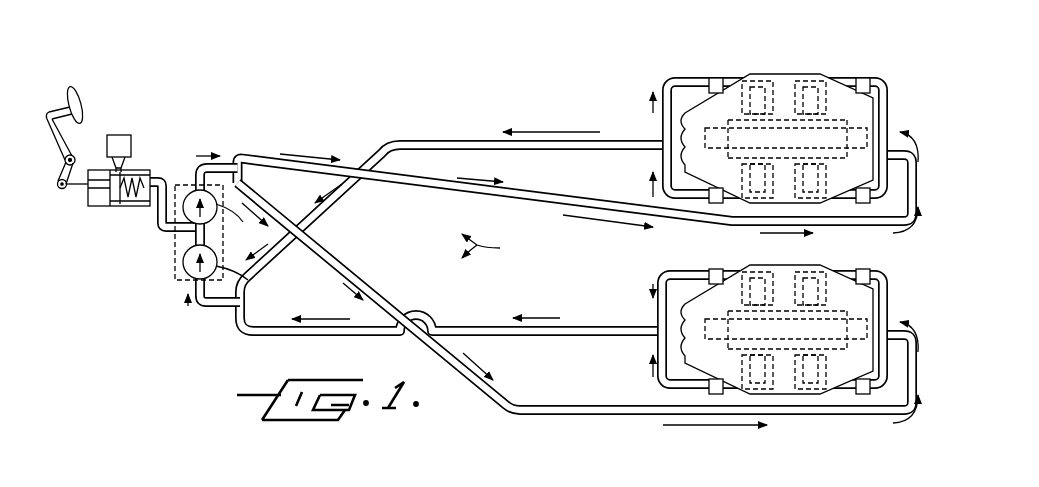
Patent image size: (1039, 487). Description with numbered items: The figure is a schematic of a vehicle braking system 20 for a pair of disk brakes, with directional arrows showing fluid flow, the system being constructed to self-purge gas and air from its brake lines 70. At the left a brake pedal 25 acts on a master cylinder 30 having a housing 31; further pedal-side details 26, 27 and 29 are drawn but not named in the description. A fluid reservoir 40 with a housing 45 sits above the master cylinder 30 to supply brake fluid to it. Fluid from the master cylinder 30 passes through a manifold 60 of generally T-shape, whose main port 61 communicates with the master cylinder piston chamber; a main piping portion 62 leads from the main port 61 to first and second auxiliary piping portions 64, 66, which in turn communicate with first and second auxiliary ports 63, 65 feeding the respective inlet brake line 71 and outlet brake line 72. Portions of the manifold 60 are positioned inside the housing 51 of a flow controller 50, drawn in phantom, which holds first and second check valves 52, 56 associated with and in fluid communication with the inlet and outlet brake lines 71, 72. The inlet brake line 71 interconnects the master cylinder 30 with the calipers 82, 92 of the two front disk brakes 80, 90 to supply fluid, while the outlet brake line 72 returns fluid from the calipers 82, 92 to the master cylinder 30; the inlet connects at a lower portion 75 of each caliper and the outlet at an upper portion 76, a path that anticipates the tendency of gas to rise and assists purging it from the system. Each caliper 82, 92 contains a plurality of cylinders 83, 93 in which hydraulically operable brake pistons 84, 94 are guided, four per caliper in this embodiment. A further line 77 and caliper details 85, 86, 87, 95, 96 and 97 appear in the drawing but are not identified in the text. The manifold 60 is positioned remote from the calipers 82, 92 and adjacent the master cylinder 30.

The vehicle braking system 20 is at (352, 102).
The brake pedal 25 is at (83, 100).
The pedal arm 26 is at (73, 132).
The pivot link 27 is at (78, 168).
The master cylinder 29 is at (90, 206).
The master cylinder 30 is at (172, 148).
The housing 31 is at (105, 210).
The fluid reservoir 40 is at (147, 130).
The housing 45 is at (120, 140).
The flow controller 50 is at (182, 300).
The housing 51 is at (170, 290).
The first check valve 52 is at (262, 216).
The second check valve 56 is at (246, 280).
The manifold 60 is at (140, 250).
The main port 61 is at (156, 196).
The main piping portion 62 is at (150, 230).
The first auxiliary port 63 is at (218, 182).
The first auxiliary piping portion 64 is at (188, 178).
The second auxiliary port 65 is at (222, 308).
The second auxiliary piping portion 66 is at (186, 250).
The brake lines 70 is at (497, 248).
The inlet brake line 71 is at (520, 413).
The outlet brake line 72 is at (468, 144).
The lower portion 75 is at (906, 114).
The upper portion 76 is at (662, 170).
The fluid line 77 is at (544, 192).
The disk brake 80 is at (785, 342).
The caliper 82 is at (785, 320).
The cylinders 83 is at (782, 343).
The brake pistons 84 is at (770, 367).
The rotor 85 is at (836, 264).
The cylinder 86 is at (779, 341).
The port 87 is at (778, 345).
The disk brake 90 is at (779, 134).
The caliper 92 is at (848, 86).
The cylinders 93 is at (818, 86).
The brake pistons 94 is at (780, 102).
The cylinder 95 is at (734, 126).
The seal 96 is at (760, 90).
The port 97 is at (730, 80).